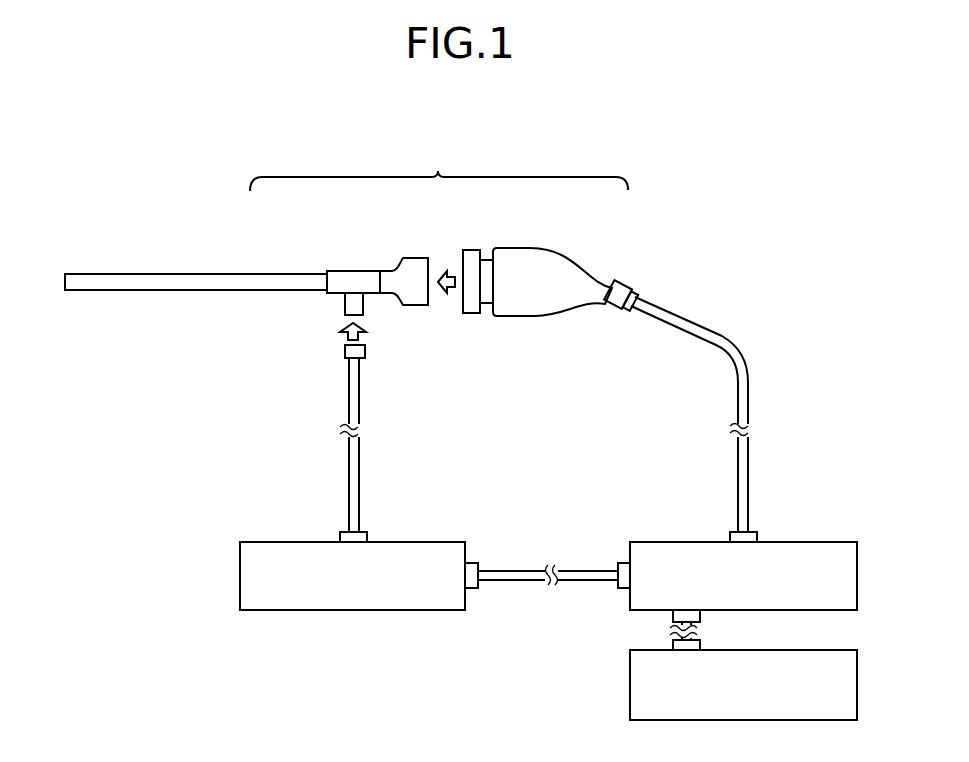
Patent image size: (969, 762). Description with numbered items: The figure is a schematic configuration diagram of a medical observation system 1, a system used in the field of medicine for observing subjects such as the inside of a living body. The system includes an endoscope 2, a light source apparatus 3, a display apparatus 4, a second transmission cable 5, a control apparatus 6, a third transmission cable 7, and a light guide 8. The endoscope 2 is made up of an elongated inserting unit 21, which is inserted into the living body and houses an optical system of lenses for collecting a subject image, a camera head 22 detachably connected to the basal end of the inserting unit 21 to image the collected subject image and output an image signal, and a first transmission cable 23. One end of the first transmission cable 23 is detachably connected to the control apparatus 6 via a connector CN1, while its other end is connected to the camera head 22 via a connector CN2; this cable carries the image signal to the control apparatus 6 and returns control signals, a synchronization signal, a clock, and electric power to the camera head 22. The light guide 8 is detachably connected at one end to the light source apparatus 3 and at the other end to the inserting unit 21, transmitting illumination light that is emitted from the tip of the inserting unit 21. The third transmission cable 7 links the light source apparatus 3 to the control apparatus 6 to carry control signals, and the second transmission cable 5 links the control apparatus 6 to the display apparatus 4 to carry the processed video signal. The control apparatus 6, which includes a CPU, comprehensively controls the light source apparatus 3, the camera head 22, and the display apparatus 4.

The medical observation system 1 is at (703, 197).
The endoscope 2 is at (439, 168).
The inserting unit 21 is at (275, 284).
The camera head 22 is at (515, 265).
The first transmission cable 23 is at (662, 313).
The light source apparatus 3 is at (412, 541).
The display apparatus 4 is at (812, 630).
The second transmission cable 5 is at (672, 637).
The control apparatus 6 is at (808, 541).
The third transmission cable 7 is at (590, 571).
The light guide 8 is at (348, 485).
The connector CN1 is at (753, 532).
The connector CN2 is at (628, 309).